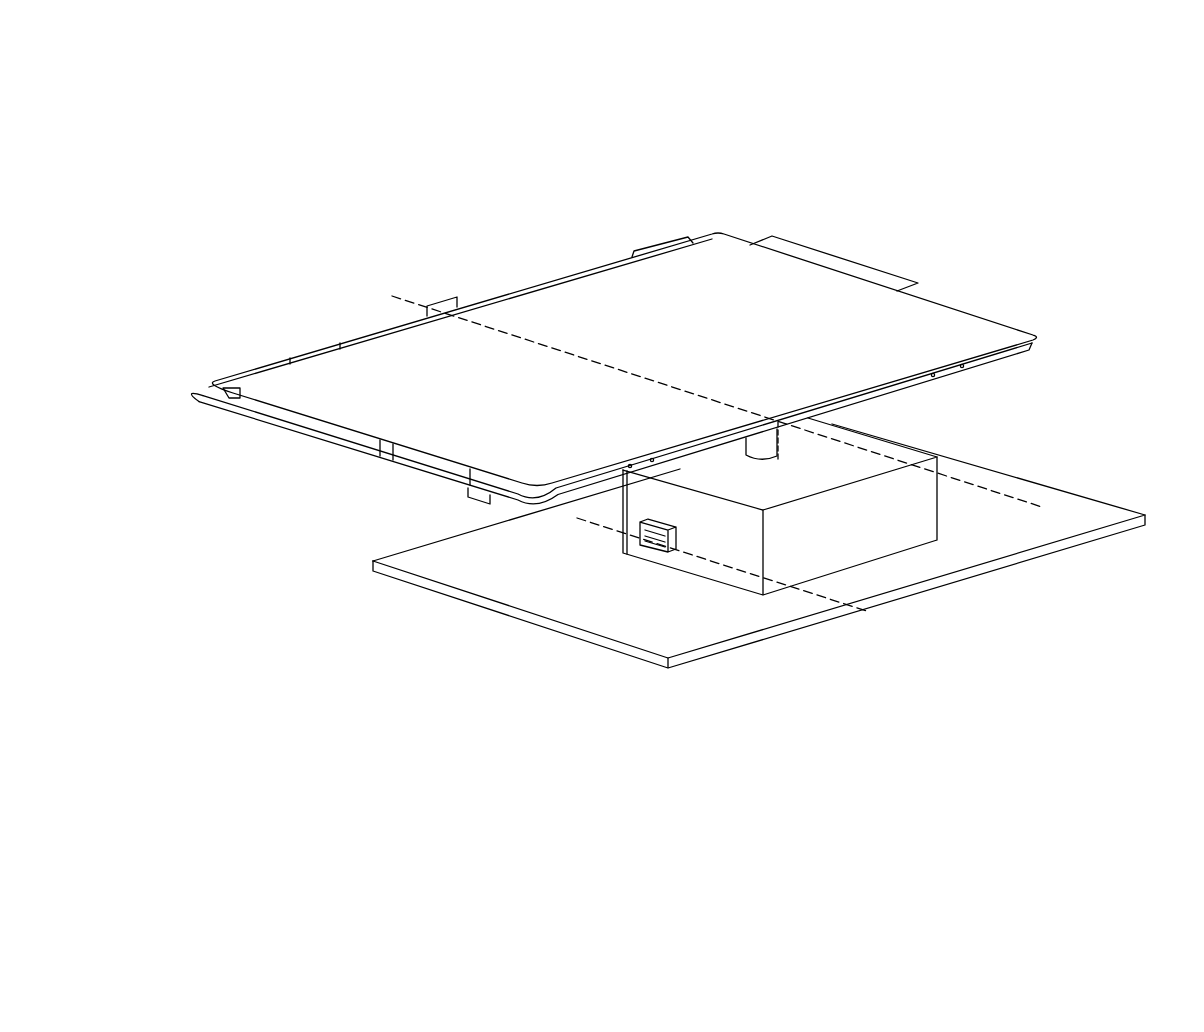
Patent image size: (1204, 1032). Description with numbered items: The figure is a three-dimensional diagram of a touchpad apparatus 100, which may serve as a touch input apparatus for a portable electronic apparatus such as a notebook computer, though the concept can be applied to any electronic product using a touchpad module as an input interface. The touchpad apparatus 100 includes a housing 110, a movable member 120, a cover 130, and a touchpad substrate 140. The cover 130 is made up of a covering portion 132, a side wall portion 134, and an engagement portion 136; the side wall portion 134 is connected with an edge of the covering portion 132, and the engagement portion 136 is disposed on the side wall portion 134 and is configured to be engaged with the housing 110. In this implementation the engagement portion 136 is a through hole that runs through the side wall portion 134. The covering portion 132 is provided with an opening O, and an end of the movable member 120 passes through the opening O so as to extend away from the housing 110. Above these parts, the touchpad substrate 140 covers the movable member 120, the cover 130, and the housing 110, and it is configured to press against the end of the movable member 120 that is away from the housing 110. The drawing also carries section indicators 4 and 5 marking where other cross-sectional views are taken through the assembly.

The touchpad apparatus 100 is at (300, 168).
The housing 110 is at (1045, 497).
The movable member 120 is at (776, 447).
The opening O is at (788, 462).
The cover 130 is at (762, 698).
The covering portion 132 is at (745, 487).
The side wall portion 134 is at (687, 558).
The engagement portion 136 is at (635, 553).
The touchpad substrate 140 is at (943, 328).
The section line 4- 4 is at (383, 298).
The section line 5- 5 is at (575, 527).